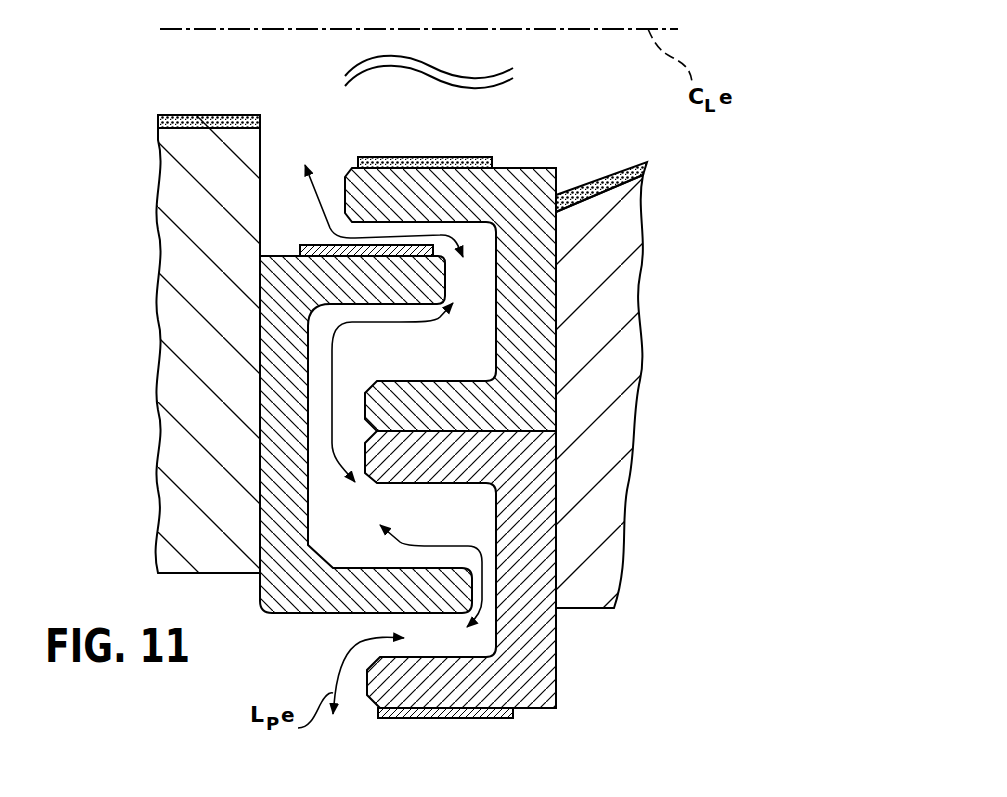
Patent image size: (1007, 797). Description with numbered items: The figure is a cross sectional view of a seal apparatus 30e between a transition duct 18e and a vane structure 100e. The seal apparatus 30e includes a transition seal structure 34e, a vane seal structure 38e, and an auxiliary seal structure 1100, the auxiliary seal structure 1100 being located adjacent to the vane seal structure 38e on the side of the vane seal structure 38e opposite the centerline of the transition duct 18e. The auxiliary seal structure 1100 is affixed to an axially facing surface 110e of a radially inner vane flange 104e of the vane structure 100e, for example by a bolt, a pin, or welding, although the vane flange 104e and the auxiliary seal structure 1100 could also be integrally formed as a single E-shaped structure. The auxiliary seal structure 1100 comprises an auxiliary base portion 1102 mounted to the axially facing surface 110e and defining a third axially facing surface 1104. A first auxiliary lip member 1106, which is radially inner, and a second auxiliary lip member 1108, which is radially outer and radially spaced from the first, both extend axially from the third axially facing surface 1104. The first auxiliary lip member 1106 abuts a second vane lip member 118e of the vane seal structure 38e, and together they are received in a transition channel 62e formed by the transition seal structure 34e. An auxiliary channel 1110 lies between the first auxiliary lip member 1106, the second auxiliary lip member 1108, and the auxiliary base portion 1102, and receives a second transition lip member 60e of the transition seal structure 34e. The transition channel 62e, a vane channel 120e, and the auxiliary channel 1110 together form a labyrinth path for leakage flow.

The transition duct 18e is at (152, 435).
The seal apparatus 30e is at (515, 104).
The transition seal structure 34e is at (290, 245).
The vane seal structure 38e is at (556, 132).
The second transition lip member 60e is at (337, 605).
The transition channel 62e is at (351, 386).
The vane structure 100e is at (628, 551).
The radially inner vane flange 104e is at (630, 363).
The axially facing surface 110e is at (557, 492).
The second vane lip member 118e is at (405, 390).
The vane channel 120e is at (462, 316).
The auxiliary seal structure 1100 is at (560, 714).
The auxiliary base portion 1102 is at (542, 622).
The third axially facing surface 1104 is at (497, 550).
The first auxiliary lip member 1106 is at (458, 470).
The second auxiliary lip member 1108 is at (440, 698).
The auxiliary channel 1110 is at (385, 558).